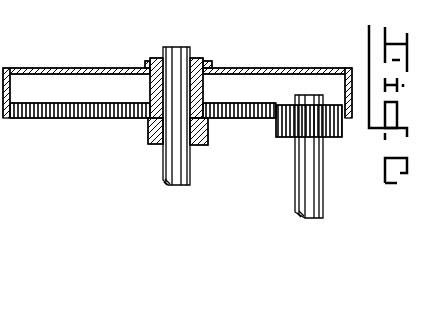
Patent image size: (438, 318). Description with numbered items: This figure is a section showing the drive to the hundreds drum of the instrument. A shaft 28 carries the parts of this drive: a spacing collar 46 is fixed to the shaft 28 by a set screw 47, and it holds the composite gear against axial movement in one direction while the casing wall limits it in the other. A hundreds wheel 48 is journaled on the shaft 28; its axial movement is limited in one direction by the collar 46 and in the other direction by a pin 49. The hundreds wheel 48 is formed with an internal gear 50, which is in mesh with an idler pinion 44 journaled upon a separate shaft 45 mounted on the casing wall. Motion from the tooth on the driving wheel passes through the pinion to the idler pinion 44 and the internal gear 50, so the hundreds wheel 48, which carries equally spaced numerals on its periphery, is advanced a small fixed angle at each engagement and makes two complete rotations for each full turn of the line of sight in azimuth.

The shaft 28 is at (164, 178).
The idler pinion 44 is at (347, 146).
The shaft 45 is at (332, 205).
The spacing collar 46 is at (148, 130).
The set screw 47 is at (208, 128).
The hundreds wheel 48 is at (62, 68).
The pin 49 is at (200, 60).
The internal gear 50 is at (62, 120).